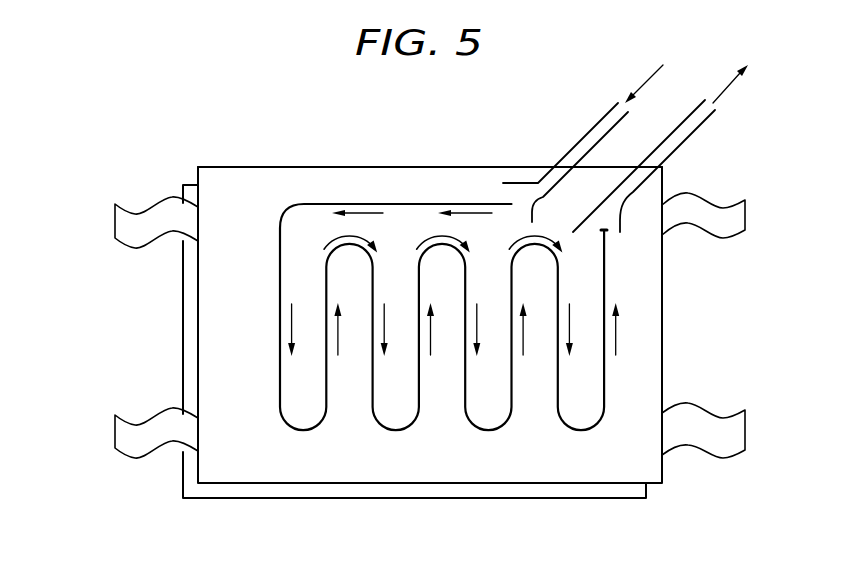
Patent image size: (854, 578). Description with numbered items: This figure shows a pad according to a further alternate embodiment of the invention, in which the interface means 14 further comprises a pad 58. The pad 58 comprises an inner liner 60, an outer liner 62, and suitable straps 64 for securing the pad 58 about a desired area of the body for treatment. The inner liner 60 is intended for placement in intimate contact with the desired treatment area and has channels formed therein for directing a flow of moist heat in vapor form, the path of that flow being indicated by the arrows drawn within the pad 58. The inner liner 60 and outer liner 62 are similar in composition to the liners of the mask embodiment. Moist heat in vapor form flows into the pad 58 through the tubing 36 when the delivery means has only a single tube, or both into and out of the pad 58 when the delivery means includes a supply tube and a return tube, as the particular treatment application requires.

The interface means 14 is at (309, 140).
The tubing 36 is at (700, 143).
The pad 58 is at (449, 156).
The inner liner 60 is at (298, 490).
The outer liner 62 is at (255, 478).
The straps 64 is at (122, 228).